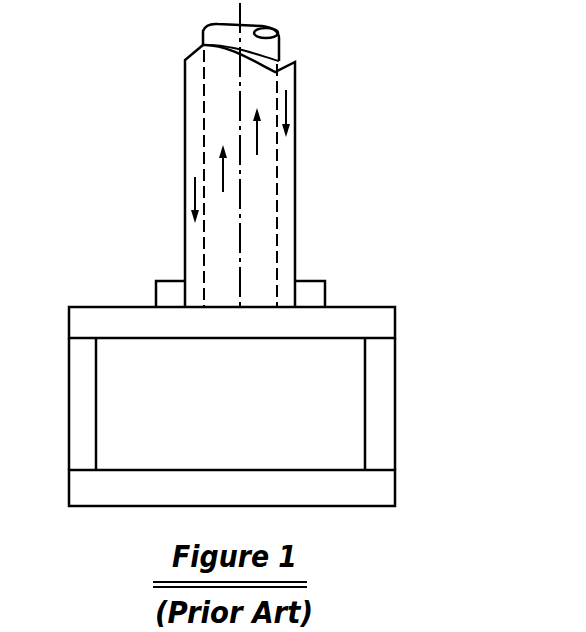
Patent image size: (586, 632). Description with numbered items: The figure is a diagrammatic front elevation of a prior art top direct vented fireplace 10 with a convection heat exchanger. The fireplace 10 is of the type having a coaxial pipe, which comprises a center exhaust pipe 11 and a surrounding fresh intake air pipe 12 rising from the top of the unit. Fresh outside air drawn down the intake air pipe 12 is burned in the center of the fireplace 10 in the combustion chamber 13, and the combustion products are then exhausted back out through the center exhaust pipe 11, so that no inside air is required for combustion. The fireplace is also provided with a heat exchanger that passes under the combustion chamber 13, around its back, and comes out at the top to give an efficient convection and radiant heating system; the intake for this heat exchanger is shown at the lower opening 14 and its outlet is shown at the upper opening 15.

The top direct vented fireplace 10 is at (349, 119).
The exhaust pipe 11 is at (277, 50).
The fresh intake air pipe 12 is at (296, 177).
The combustion chamber 13 is at (314, 369).
The heat exchanger intake 14 is at (388, 492).
The heat exchanger outlet 15 is at (360, 323).